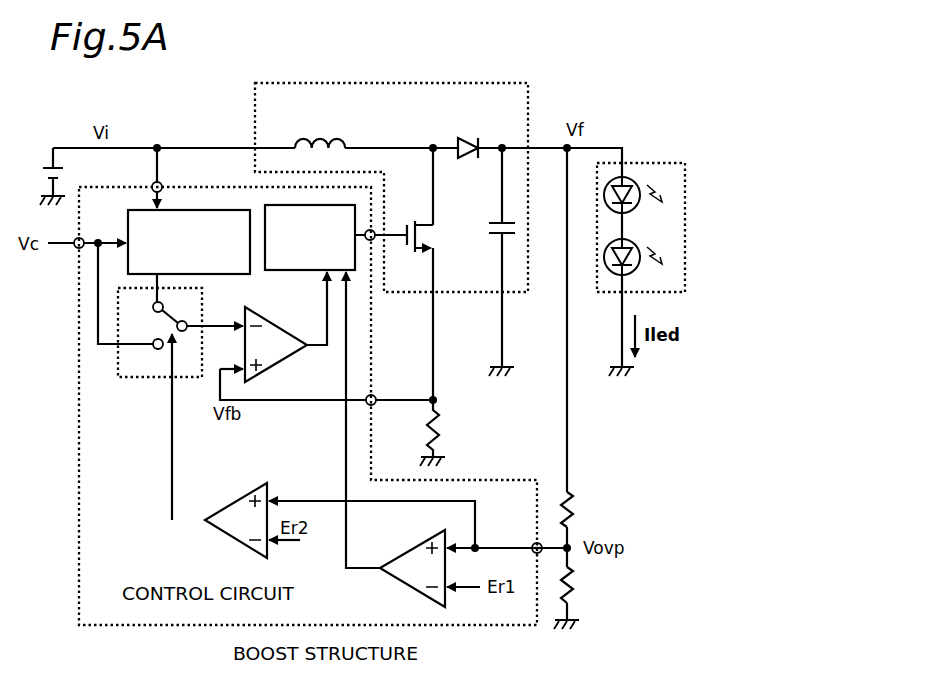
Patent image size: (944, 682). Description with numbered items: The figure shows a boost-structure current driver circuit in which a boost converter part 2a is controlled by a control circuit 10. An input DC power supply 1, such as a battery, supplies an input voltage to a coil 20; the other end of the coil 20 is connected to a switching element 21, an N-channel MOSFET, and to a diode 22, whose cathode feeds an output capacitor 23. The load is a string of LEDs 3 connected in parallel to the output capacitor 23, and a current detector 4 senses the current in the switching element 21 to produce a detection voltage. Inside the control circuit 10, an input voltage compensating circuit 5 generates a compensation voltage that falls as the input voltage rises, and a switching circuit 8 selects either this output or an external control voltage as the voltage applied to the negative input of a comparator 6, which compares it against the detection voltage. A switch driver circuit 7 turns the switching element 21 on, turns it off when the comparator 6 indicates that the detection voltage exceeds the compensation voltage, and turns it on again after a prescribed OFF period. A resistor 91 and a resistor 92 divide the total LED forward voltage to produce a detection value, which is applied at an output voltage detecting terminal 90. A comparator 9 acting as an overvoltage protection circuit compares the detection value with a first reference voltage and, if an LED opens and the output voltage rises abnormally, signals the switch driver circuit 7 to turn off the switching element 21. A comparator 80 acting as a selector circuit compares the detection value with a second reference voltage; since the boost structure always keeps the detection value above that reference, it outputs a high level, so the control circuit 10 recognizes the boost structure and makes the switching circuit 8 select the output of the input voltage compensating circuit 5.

The input DC power supply 1 is at (40, 165).
The boost converter part 2a is at (475, 295).
The LEDs 3 is at (652, 162).
The current detector 4 is at (447, 423).
The input voltage compensating circuit 5 is at (205, 276).
The comparator 6 is at (278, 370).
The switch driver circuit 7 is at (285, 273).
The switching circuit 8 is at (150, 380).
The comparator 9 is at (418, 540).
The control circuit 10 is at (213, 628).
The coil 20 is at (333, 137).
The switching element 21 is at (410, 220).
The diode 22 is at (468, 160).
The output capacitor 23 is at (488, 234).
The comparator 80 is at (228, 497).
The output voltage detecting terminal 90 is at (532, 542).
The resistor 91 is at (578, 514).
The resistor 92 is at (578, 584).